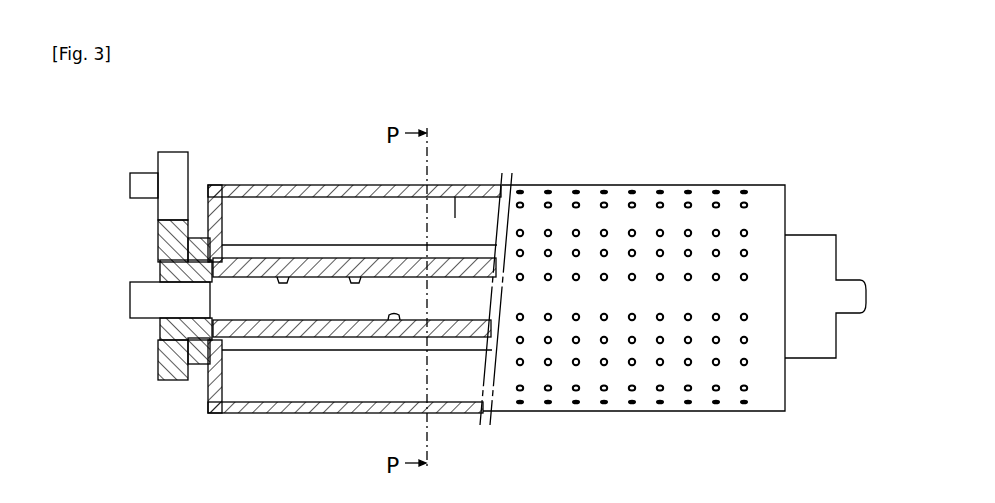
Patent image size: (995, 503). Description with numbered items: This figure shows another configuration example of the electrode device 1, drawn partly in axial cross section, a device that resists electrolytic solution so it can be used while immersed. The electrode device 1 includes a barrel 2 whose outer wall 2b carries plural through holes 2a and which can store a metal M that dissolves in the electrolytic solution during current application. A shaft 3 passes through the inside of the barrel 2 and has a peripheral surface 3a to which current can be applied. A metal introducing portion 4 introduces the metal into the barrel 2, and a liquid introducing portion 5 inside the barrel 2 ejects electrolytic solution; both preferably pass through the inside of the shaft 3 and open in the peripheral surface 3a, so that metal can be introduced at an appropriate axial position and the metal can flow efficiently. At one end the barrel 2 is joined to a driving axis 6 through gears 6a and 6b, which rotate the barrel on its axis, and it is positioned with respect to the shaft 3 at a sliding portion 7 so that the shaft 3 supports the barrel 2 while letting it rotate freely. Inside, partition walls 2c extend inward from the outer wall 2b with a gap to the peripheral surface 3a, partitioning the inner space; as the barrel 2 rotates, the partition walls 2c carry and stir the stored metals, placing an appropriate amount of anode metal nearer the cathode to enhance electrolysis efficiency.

The electrode device 1 is at (806, 206).
The barrel 2 is at (647, 267).
The through holes 2a is at (577, 186).
The outer wall 2b is at (451, 186).
The partition walls 2c is at (388, 220).
The shaft 3 is at (130, 298).
The peripheral surface 3a is at (300, 257).
The metal introducing portion 4 is at (395, 322).
The liquid introducing portion 5 is at (356, 257).
The driving axis 6 is at (136, 187).
The gear 6a is at (178, 158).
The gear 6b is at (158, 235).
The sliding portion 7 is at (160, 272).